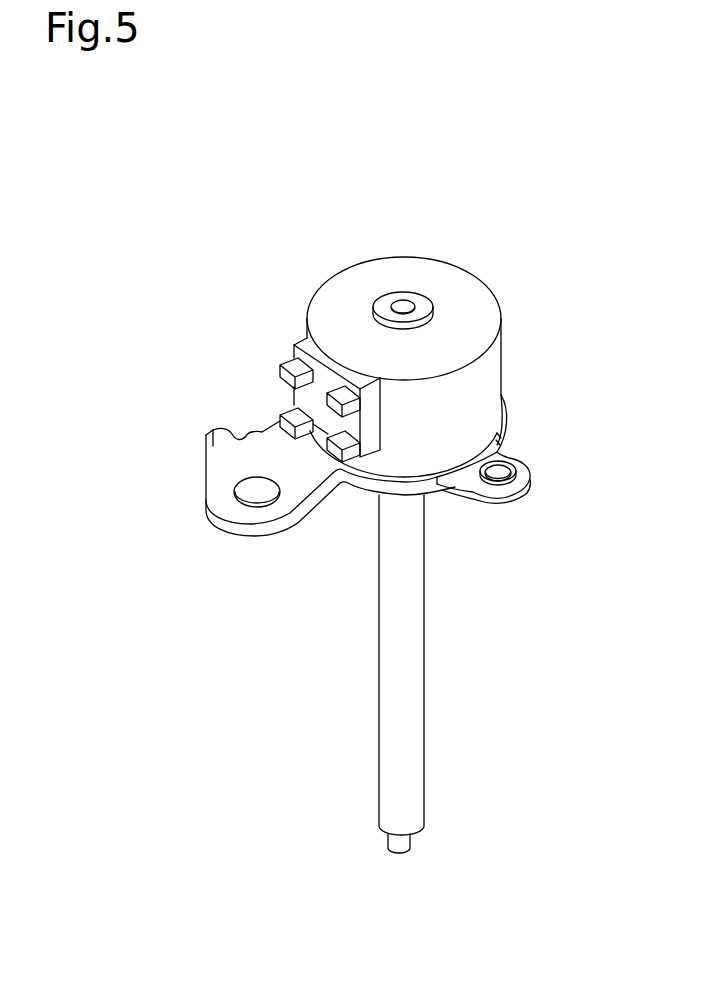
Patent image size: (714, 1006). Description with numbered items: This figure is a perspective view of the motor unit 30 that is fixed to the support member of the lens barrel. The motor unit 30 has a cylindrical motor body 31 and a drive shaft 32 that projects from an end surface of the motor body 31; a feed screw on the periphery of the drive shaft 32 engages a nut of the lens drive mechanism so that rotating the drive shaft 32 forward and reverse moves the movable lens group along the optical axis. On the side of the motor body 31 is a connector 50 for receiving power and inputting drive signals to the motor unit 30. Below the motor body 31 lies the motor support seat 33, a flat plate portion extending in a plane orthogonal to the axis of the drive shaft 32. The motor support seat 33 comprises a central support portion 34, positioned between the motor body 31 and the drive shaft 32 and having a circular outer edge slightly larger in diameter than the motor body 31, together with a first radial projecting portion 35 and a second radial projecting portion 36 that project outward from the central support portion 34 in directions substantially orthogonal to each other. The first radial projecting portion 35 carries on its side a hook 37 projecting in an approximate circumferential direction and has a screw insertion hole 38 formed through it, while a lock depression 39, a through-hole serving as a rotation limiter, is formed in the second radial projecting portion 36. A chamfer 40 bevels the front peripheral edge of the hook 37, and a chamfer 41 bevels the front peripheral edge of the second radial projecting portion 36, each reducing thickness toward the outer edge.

The motor unit 30 is at (474, 254).
The motor body 31 is at (483, 385).
The drive shaft 32 is at (410, 708).
The motor support seat 33 is at (355, 494).
The central support portion 34 is at (503, 420).
The first radial projecting portion 35 is at (220, 473).
The second radial projecting portion 36 is at (510, 498).
The hook 37 is at (222, 430).
The screw insertion hole 38 is at (252, 497).
The lock depression 39 is at (513, 467).
The chamfer 40 is at (207, 434).
The chamfer 41 is at (519, 482).
The connector 50 is at (280, 362).